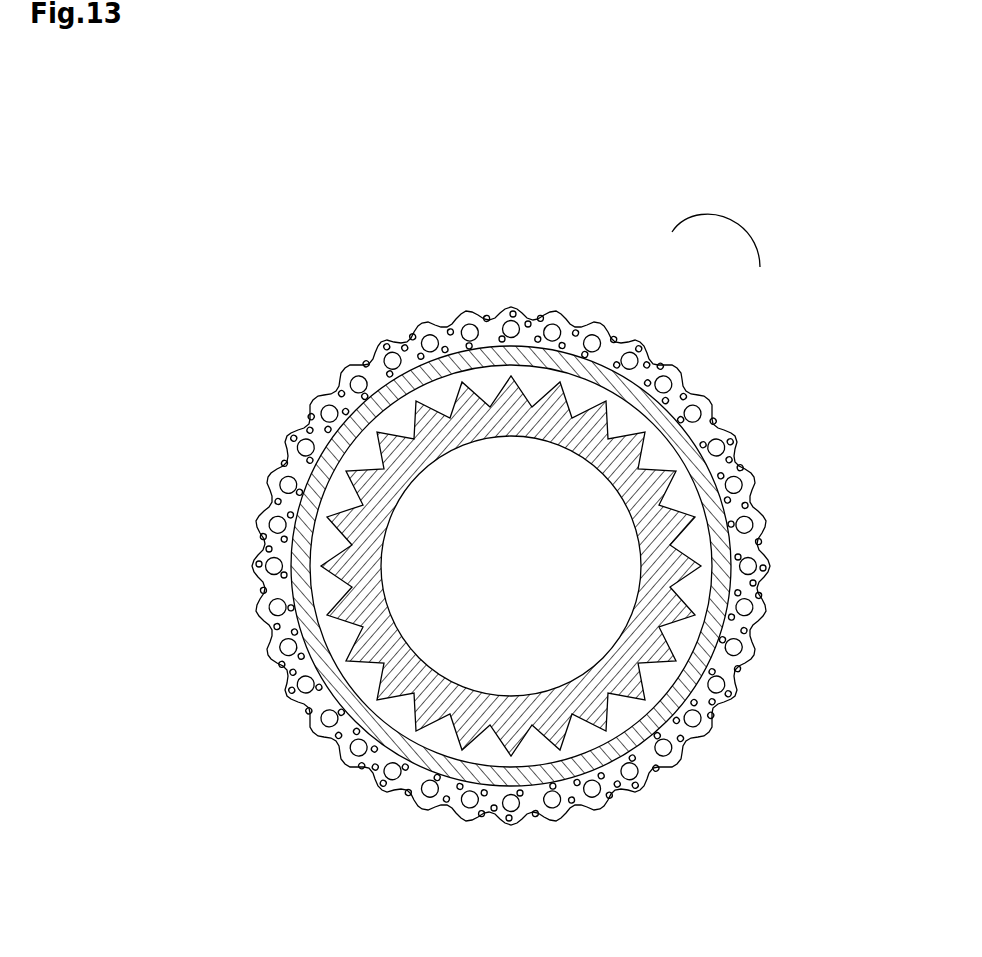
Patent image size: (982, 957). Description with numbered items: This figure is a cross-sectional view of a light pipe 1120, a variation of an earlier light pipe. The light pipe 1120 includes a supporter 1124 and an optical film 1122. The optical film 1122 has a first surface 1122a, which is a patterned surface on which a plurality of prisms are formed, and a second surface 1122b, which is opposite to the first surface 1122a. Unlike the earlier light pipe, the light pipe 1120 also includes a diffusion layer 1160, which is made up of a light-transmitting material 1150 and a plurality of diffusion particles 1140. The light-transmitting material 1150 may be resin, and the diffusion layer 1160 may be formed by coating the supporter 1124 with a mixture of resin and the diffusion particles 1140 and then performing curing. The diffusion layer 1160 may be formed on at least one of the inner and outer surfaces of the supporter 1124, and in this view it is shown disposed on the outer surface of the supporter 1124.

The light pipe 1120 is at (425, 131).
The optical film 1122 is at (536, 697).
The first surface 1122a is at (608, 712).
The second surface 1122b is at (532, 695).
The supporter 1124 is at (722, 592).
The diffusion particles 1140 is at (593, 344).
The light-transmitting material 1150 is at (635, 344).
The diffusion layer 1160 is at (729, 226).